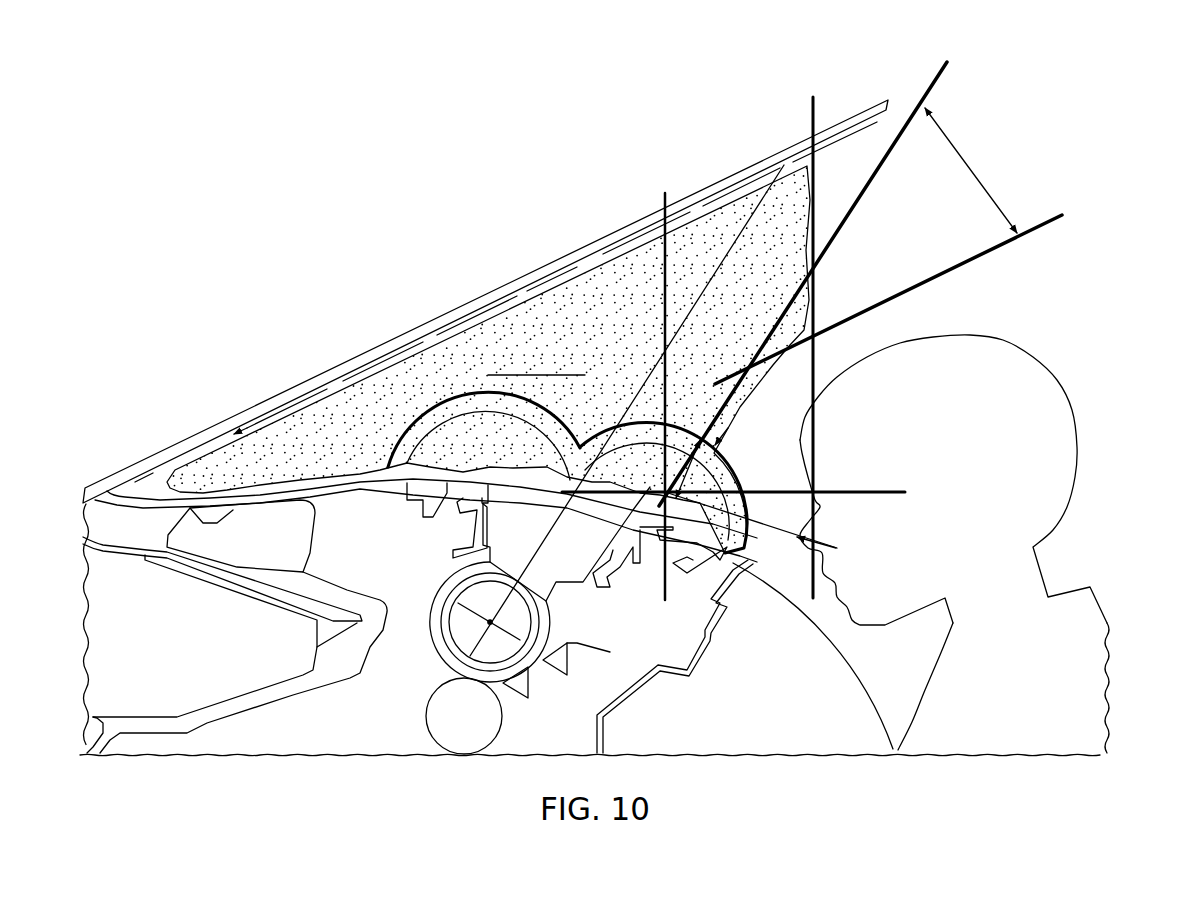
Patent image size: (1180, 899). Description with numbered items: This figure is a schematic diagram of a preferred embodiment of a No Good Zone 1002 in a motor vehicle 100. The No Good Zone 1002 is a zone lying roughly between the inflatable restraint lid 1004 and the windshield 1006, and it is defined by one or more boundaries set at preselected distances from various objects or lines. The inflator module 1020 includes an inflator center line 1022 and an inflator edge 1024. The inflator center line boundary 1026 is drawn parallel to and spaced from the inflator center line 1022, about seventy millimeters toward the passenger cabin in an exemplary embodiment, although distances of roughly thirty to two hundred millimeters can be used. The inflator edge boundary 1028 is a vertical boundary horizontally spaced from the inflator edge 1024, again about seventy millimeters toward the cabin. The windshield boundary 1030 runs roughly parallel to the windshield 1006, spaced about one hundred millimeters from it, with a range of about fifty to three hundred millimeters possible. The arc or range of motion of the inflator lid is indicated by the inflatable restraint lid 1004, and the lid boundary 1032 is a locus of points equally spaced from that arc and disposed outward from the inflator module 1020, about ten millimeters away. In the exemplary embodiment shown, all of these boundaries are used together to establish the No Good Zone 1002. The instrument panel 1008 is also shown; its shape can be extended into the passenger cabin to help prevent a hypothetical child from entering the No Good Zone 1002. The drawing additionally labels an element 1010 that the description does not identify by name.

The motor vehicle 100 is at (275, 207).
The No Good Zone 1002 is at (614, 329).
The inflatable restraint lid 1004 is at (427, 430).
The windshield 1006 is at (421, 332).
The instrument panel 1008 is at (827, 637).
The occupant head 1010 is at (1068, 447).
The inflator module 1020 is at (530, 602).
The inflator center line 1022 is at (656, 360).
The inflator edge 1024 is at (665, 193).
The inflator center line boundary 1026 is at (928, 90).
The inflator edge boundary 1028 is at (813, 115).
The windshield boundary 1030 is at (1048, 217).
The lid boundary 1032 is at (733, 473).